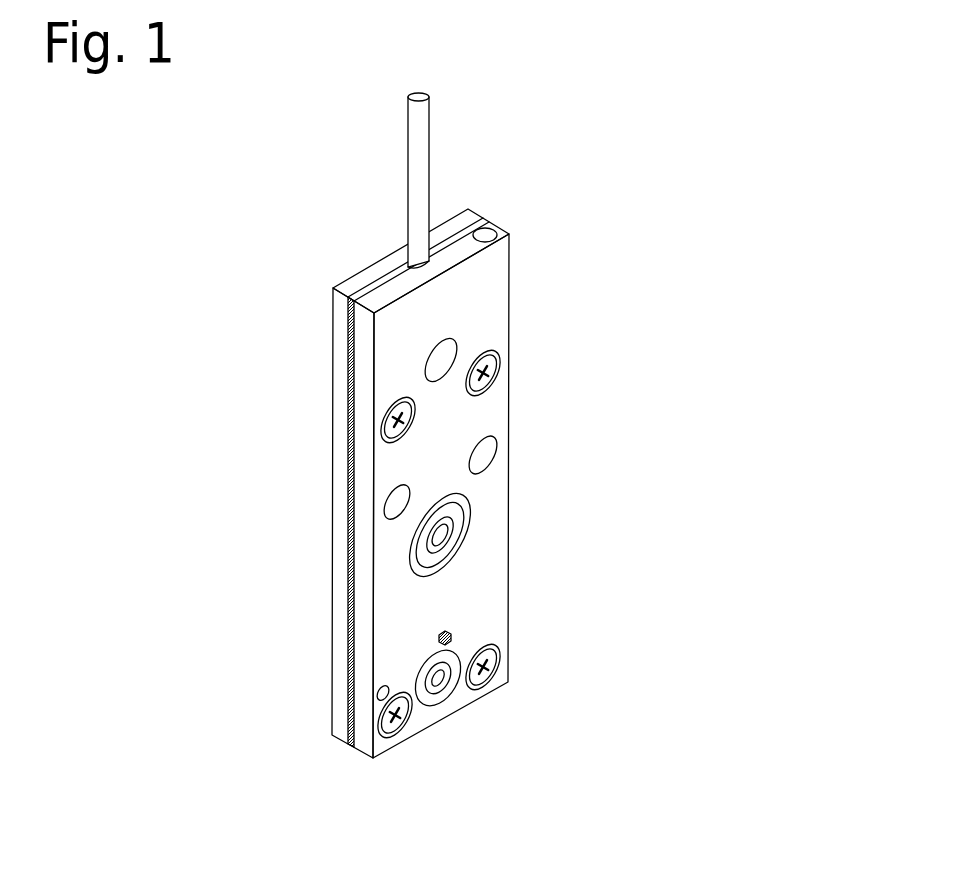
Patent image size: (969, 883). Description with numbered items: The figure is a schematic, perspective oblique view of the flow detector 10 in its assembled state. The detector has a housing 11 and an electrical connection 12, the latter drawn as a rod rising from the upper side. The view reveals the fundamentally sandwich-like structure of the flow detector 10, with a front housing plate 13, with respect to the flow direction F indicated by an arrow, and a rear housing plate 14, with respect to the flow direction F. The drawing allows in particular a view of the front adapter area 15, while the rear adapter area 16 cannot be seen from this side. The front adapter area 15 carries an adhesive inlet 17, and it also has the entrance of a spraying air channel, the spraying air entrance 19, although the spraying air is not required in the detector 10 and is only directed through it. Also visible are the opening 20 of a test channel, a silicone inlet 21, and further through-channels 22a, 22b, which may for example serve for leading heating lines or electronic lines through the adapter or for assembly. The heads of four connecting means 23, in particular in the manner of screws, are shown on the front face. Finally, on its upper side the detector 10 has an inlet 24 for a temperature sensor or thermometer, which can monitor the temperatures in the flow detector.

The flow detector 10 is at (506, 442).
The housing 11 is at (438, 476).
The electrical connection 12 is at (408, 158).
The front housing plate 13 is at (483, 583).
The rear housing plate 14 is at (345, 634).
The front adapter area 15 is at (473, 298).
The rear adapter area 16 is at (305, 358).
The adhesive inlet 17 is at (462, 548).
The spraying air entrance 19 is at (443, 690).
The opening of a test channel 20 is at (448, 636).
The silicone inlet 21 is at (443, 357).
The through-channel 22a is at (387, 505).
The through-channel 22b is at (490, 455).
The connecting means 23 is at (502, 377).
The inlet for a temperature sensor 24 is at (500, 230).
The flow direction F is at (539, 614).